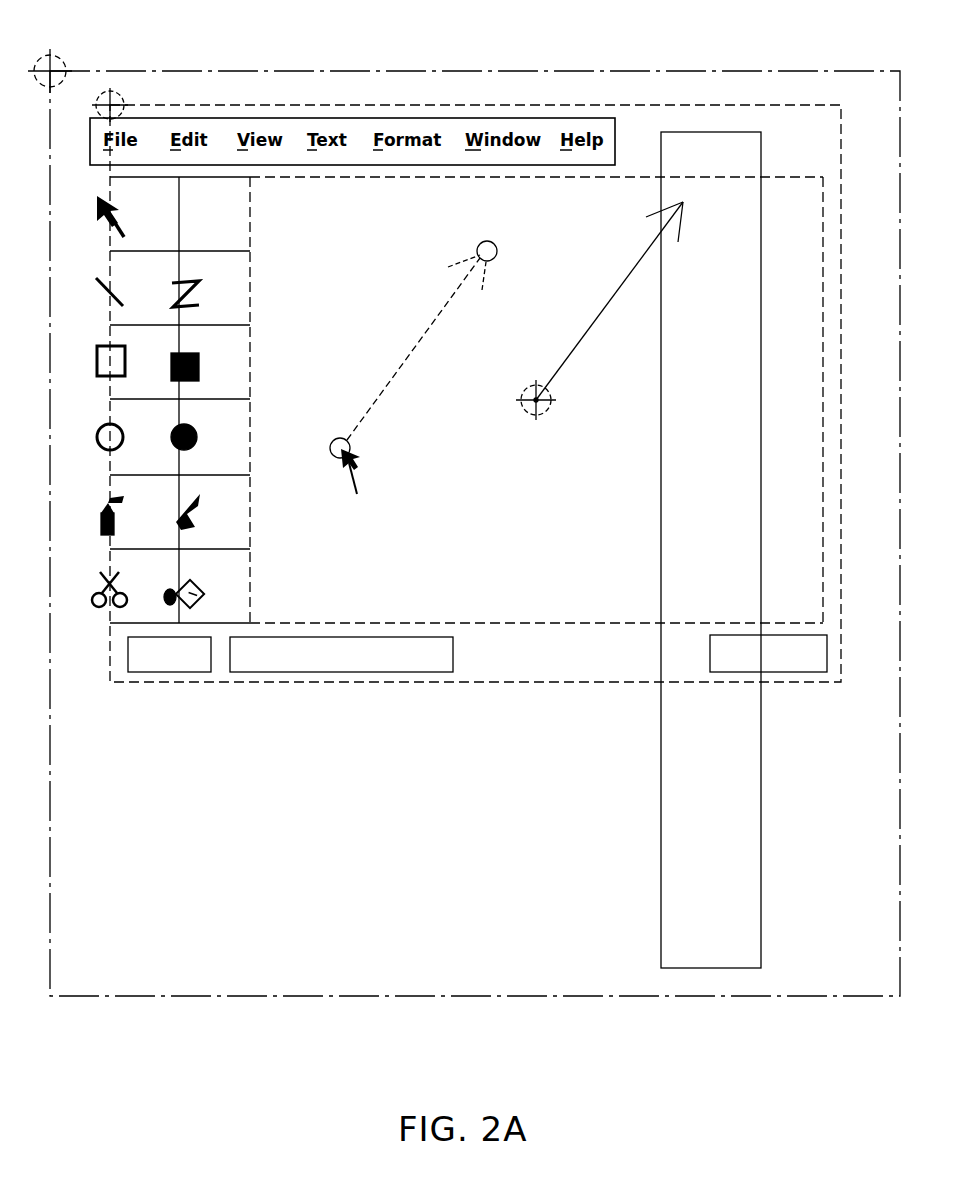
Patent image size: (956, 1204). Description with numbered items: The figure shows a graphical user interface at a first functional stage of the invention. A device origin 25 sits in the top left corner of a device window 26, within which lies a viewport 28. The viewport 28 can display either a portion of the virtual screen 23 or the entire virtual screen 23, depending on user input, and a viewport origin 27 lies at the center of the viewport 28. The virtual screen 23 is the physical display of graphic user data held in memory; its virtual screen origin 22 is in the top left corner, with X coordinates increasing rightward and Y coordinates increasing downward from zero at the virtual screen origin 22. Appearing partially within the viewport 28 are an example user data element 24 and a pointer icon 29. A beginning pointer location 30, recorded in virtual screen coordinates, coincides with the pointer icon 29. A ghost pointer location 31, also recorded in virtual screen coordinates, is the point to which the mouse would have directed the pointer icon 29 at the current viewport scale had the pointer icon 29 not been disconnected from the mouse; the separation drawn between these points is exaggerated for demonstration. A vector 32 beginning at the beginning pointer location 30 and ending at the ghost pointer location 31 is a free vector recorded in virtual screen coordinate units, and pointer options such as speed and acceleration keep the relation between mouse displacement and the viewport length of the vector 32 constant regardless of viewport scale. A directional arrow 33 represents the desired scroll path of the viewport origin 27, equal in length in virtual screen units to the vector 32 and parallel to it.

The virtual screen origin 22 is at (53, 54).
The virtual screen 23 is at (190, 68).
The user data element 24 is at (660, 805).
The device origin 25 is at (117, 95).
The device window 26 is at (318, 104).
The viewport origin 27 is at (549, 394).
The viewport 28 is at (280, 178).
The pointer icon 29 is at (340, 455).
The beginning pointer location 30 is at (350, 447).
The ghost pointer location 31 is at (485, 240).
The vector 32 is at (403, 364).
The directional arrow 33 is at (634, 263).